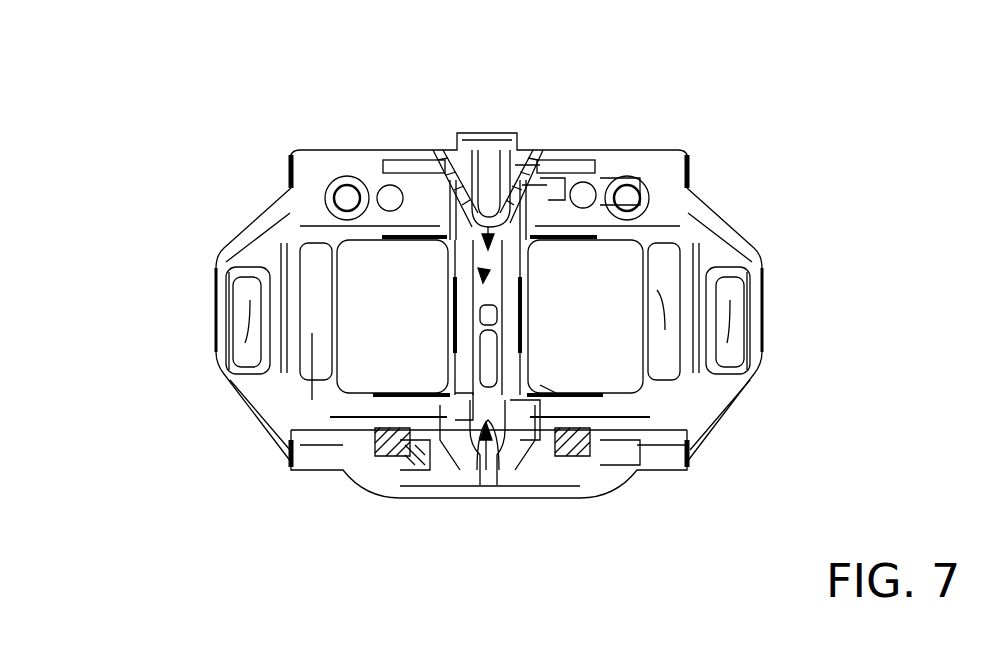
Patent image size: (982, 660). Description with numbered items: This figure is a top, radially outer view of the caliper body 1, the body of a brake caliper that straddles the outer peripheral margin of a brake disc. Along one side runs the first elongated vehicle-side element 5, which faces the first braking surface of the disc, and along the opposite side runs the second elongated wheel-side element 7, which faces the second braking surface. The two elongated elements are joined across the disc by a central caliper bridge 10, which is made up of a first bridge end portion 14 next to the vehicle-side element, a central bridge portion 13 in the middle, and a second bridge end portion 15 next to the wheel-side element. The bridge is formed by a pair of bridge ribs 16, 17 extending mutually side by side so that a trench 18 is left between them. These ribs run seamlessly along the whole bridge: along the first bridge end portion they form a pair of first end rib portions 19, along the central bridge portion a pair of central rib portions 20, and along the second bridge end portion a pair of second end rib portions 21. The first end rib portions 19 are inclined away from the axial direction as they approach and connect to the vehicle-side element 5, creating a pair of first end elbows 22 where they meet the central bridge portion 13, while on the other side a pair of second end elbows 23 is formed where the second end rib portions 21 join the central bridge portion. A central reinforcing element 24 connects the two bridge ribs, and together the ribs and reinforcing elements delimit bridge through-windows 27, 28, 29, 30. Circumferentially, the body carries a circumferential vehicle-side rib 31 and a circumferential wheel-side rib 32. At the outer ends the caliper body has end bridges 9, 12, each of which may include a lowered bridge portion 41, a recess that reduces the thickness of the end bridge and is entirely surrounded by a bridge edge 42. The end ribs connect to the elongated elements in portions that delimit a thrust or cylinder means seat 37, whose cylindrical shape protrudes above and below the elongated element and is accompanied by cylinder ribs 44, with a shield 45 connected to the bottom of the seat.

The caliper body 1 is at (772, 195).
The first elongated vehicle-side element 5 is at (630, 150).
The second elongated wheel-side element 7 is at (610, 458).
The end bridge 9 is at (757, 317).
The central caliper bridge 10 is at (540, 185).
The end bridge 12 is at (220, 322).
The central bridge portion 13 is at (507, 317).
The first bridge end portion 14 is at (450, 193).
The second bridge end portion 15 is at (512, 445).
The bridge rib 16 is at (512, 352).
The bridge rib 17 is at (458, 380).
The trench 18 is at (488, 220).
The first end rib portions 19 is at (558, 148).
The central rib portions 20 is at (497, 296).
The second end rib portions 21 is at (498, 440).
The first end elbows 22 is at (470, 238).
The second end elbows 23 is at (515, 393).
The central reinforcing element 24 is at (488, 313).
The bridge through-window 27 is at (512, 195).
The bridge through-window 28 is at (488, 275).
The bridge through-window 29 is at (505, 365).
The bridge through-window 30 is at (482, 460).
The circumferential vehicle-side rib 31 is at (393, 197).
The circumferential wheel-side rib 32 is at (398, 392).
The thrust or cylinder means seat 37 is at (458, 200).
The lowered bridge portion 41 is at (245, 343).
The bridge edge 42 is at (235, 282).
The cylinder ribs 44 is at (403, 165).
The shield 45 is at (400, 452).